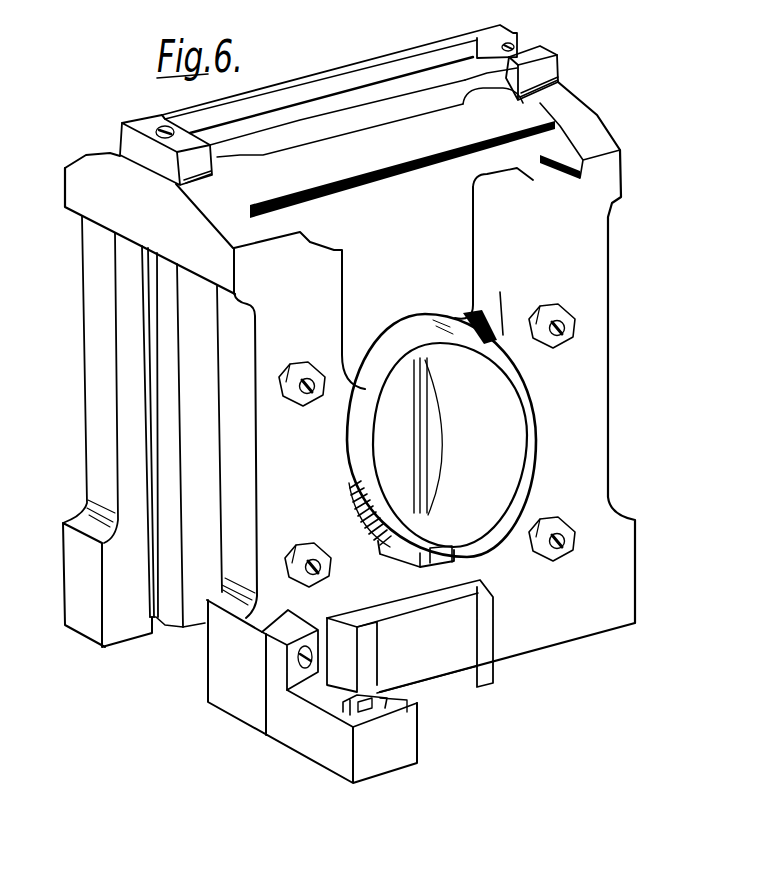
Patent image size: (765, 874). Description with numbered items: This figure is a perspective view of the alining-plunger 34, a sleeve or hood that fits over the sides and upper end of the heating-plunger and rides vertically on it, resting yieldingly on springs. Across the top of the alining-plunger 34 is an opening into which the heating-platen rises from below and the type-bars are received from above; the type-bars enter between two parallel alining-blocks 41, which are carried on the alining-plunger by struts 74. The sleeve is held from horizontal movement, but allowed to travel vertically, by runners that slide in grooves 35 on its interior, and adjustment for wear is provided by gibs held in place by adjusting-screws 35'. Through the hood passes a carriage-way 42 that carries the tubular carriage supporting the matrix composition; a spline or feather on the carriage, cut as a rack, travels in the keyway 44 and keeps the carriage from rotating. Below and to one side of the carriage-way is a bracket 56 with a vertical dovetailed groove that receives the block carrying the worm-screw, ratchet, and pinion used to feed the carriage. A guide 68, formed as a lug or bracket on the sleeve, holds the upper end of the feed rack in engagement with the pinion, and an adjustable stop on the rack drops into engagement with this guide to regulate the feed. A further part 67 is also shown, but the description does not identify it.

The alining-plunger 34 is at (595, 417).
The grooves 35 is at (240, 421).
The adjusting-screws 35' is at (436, 431).
The alining-blocks 41 is at (382, 63).
The carriage-way 42 is at (493, 420).
The keyway 44 is at (457, 560).
The bracket 56 is at (425, 643).
The clamp piece 67 is at (367, 707).
The guide 68 is at (320, 735).
The struts 74 is at (134, 119).